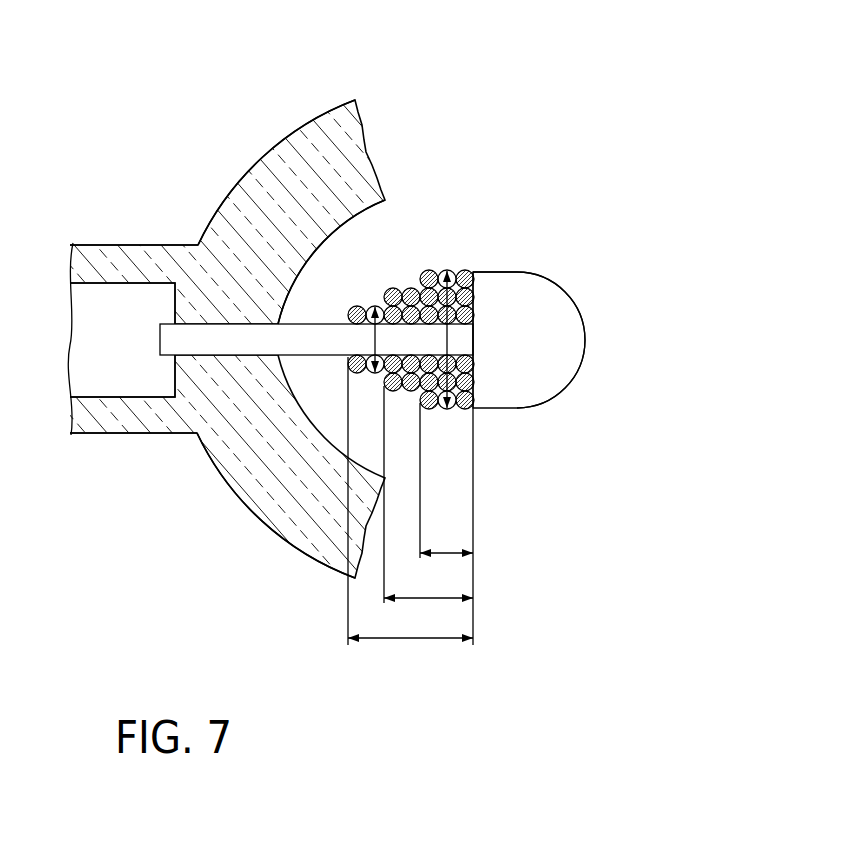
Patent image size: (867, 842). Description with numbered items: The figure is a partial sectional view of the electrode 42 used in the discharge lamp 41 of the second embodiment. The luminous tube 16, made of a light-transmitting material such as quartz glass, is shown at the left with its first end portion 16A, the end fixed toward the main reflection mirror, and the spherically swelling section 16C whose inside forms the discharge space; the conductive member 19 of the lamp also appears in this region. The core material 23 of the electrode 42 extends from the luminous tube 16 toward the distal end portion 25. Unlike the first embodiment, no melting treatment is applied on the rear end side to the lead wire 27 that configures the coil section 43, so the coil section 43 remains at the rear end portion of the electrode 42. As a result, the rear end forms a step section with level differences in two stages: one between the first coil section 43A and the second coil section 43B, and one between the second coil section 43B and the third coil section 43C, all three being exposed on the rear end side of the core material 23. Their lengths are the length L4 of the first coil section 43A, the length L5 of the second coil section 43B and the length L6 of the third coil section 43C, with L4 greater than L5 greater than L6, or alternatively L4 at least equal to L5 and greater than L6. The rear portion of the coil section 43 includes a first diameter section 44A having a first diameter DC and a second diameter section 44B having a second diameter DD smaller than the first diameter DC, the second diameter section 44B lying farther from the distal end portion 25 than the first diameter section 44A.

The luminous tube 16 is at (227, 421).
The first end portion 16A is at (148, 427).
The swelling section 16C is at (242, 487).
The conductive member 19 is at (108, 387).
The core material 23 is at (220, 332).
The distal end portion 25 is at (544, 414).
The lead wire 27 is at (473, 272).
The discharge lamp 41 is at (409, 88).
The electrode 42 is at (593, 197).
The coil section 43 is at (422, 256).
The first coil section 43A is at (365, 305).
The second coil section 43B is at (401, 283).
The third coil section 43C is at (456, 268).
The first diameter section 44A is at (483, 321).
The second diameter section 44B is at (335, 310).
The second diameter DD is at (373, 340).
The first diameter DC is at (450, 338).
The length of first coil section L4 is at (410, 501).
The length of second coil section L5 is at (428, 494).
The length of third coil section L6 is at (446, 480).